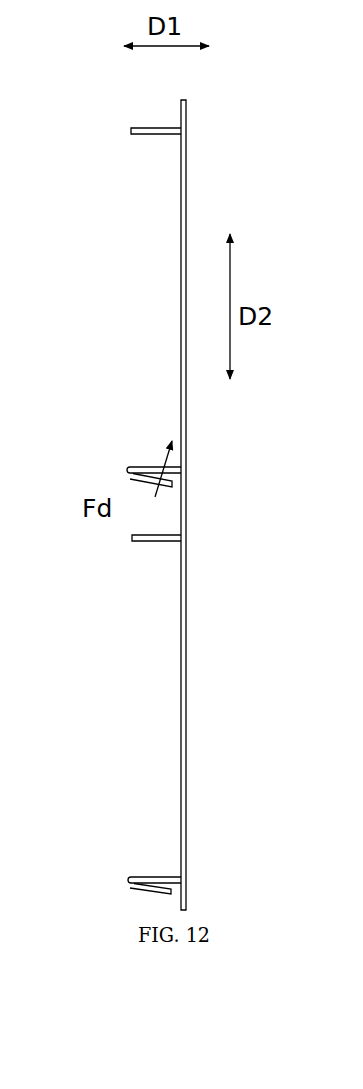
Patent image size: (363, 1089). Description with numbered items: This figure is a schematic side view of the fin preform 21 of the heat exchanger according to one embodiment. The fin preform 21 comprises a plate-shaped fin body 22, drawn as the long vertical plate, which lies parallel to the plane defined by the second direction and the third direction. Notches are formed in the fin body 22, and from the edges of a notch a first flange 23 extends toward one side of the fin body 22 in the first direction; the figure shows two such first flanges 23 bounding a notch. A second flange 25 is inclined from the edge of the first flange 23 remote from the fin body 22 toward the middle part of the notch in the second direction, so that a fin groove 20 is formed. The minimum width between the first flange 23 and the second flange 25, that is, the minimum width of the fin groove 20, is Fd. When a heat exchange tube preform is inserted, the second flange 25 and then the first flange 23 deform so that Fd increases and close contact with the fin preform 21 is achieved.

The fin groove 20 is at (148, 502).
The fin preform 21 is at (193, 111).
The fin body 22 is at (182, 642).
The first flange 23 is at (148, 468).
The second flange 25 is at (130, 480).